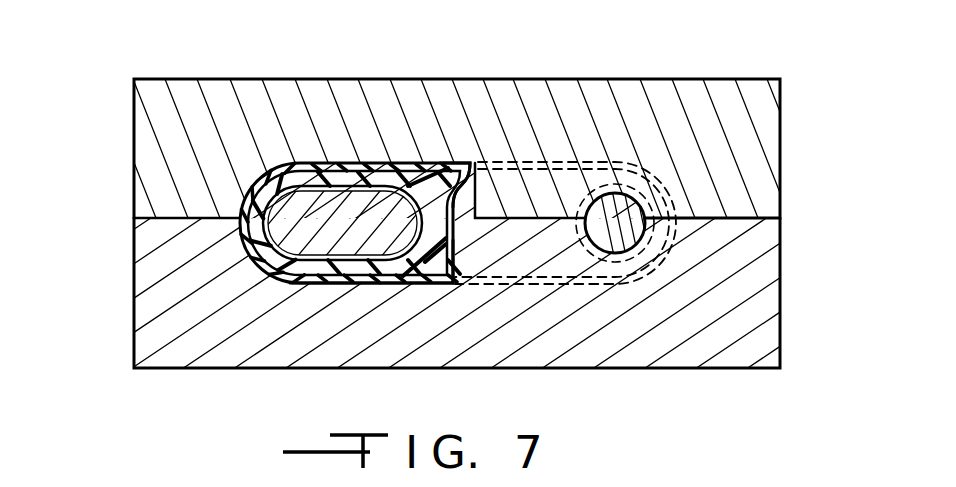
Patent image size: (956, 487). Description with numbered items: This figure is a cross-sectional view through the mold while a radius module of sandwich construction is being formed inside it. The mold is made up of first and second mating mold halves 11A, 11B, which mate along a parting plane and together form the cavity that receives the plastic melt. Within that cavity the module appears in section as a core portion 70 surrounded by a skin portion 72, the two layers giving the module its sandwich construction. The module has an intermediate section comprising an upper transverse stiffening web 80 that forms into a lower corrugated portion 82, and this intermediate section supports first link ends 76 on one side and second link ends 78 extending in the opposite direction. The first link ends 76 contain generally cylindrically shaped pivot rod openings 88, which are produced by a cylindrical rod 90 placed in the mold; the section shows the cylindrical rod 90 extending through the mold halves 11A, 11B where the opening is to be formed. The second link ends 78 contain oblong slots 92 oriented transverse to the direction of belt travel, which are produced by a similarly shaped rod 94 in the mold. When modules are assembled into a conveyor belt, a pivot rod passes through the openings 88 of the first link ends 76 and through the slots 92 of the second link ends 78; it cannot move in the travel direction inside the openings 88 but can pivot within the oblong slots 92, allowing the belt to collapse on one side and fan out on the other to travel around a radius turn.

The first mating mold half 11A is at (148, 120).
The second mating mold half 11B is at (148, 332).
The core portion 70 is at (427, 288).
The skin portion 72 is at (360, 288).
The first link ends 76 is at (643, 167).
The second link ends 78 is at (268, 191).
The transverse stiffening web 80 is at (466, 162).
The corrugated portion 82 is at (457, 273).
The pivot rod openings 88 is at (613, 193).
The cylindrical rod 90 is at (630, 208).
The oblong slots 92 is at (315, 185).
The similarly shaped rod 94 is at (338, 210).